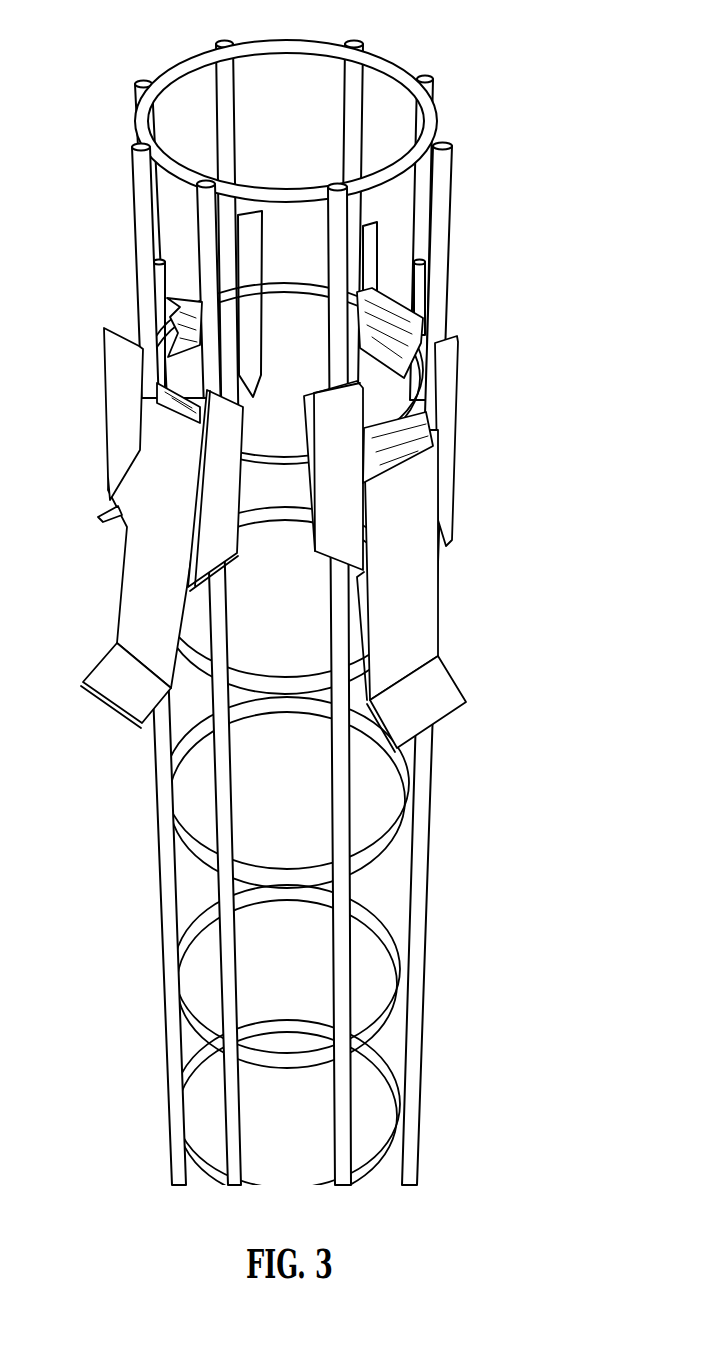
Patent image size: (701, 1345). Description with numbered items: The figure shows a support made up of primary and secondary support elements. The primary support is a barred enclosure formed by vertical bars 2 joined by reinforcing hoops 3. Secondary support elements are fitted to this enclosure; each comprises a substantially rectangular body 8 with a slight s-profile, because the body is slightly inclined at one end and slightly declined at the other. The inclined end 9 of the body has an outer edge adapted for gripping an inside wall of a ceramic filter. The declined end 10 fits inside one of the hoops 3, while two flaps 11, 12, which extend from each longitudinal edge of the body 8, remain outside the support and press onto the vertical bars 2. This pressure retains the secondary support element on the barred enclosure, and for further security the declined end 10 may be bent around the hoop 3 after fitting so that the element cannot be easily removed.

The vertical bars 2 is at (387, 63).
The reinforcing hoops 3 is at (315, 603).
The rectangular body 8 is at (420, 601).
The inclined end 9 is at (433, 692).
The declined end 10 is at (410, 437).
The flap 11 is at (122, 430).
The flap 12 is at (213, 530).